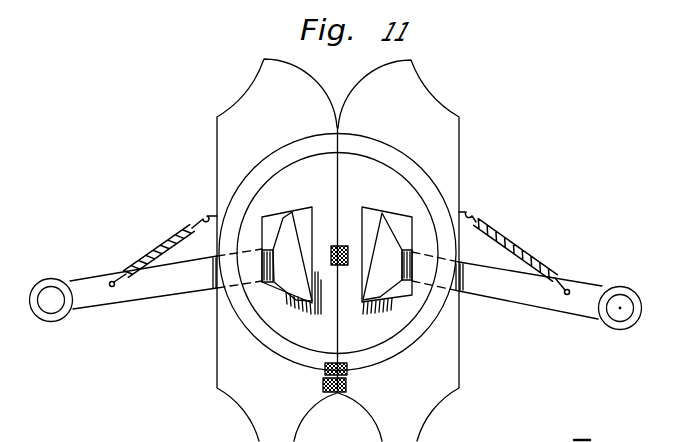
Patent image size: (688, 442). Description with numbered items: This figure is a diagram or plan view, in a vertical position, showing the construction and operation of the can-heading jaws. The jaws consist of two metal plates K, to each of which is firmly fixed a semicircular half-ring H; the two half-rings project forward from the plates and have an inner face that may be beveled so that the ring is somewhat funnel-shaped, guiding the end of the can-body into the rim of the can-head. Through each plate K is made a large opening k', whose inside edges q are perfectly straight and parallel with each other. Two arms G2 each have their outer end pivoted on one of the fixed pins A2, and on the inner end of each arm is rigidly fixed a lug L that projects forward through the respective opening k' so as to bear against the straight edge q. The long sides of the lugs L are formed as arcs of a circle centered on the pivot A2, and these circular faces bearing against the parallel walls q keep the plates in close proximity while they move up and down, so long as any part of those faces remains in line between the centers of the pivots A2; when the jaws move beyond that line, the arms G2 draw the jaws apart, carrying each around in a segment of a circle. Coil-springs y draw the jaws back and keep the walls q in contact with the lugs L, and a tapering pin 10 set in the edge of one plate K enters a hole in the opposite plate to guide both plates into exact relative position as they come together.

The metal plate K is at (338, 250).
The semicircular half-ring H is at (257, 160).
The pin 10 is at (335, 339).
The opening k' is at (337, 247).
The lug L is at (337, 256).
The inside edge of opening q is at (319, 239).
The arm G2 is at (516, 296).
The fixed pin A2 is at (52, 290).
The coil-spring y is at (179, 228).